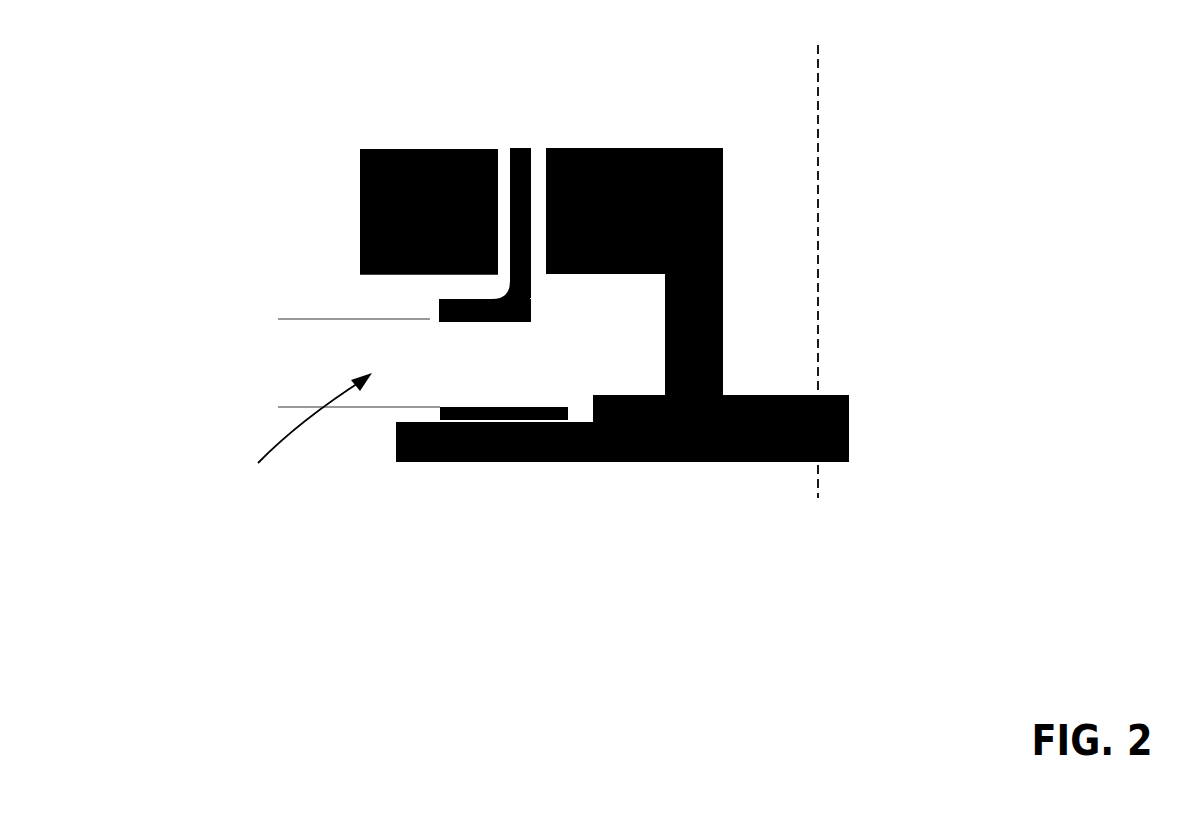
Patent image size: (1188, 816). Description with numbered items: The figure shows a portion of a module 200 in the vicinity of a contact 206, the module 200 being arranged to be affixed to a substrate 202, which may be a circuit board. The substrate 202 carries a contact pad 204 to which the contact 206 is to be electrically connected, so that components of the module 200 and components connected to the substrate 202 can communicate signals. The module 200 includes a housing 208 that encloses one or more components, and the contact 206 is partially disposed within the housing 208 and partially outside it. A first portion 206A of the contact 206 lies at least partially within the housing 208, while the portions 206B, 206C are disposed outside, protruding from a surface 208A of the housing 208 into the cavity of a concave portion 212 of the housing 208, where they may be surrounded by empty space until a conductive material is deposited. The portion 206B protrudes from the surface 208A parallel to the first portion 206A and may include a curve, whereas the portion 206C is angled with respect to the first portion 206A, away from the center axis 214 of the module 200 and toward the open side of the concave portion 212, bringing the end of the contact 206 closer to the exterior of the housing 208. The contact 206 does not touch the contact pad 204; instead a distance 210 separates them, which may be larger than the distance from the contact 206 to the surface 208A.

The module 200 is at (722, 160).
The substrate 202 is at (393, 444).
The contact pad 204 is at (550, 400).
The contact 206 is at (533, 297).
The first portion 206A is at (520, 148).
The portion 206B is at (520, 312).
The portion 206C is at (475, 323).
The housing 208 is at (350, 218).
The surface 208A is at (372, 277).
The distance 210 is at (289, 320).
The concave portion 212 is at (302, 434).
The center axis 214 is at (835, 64).